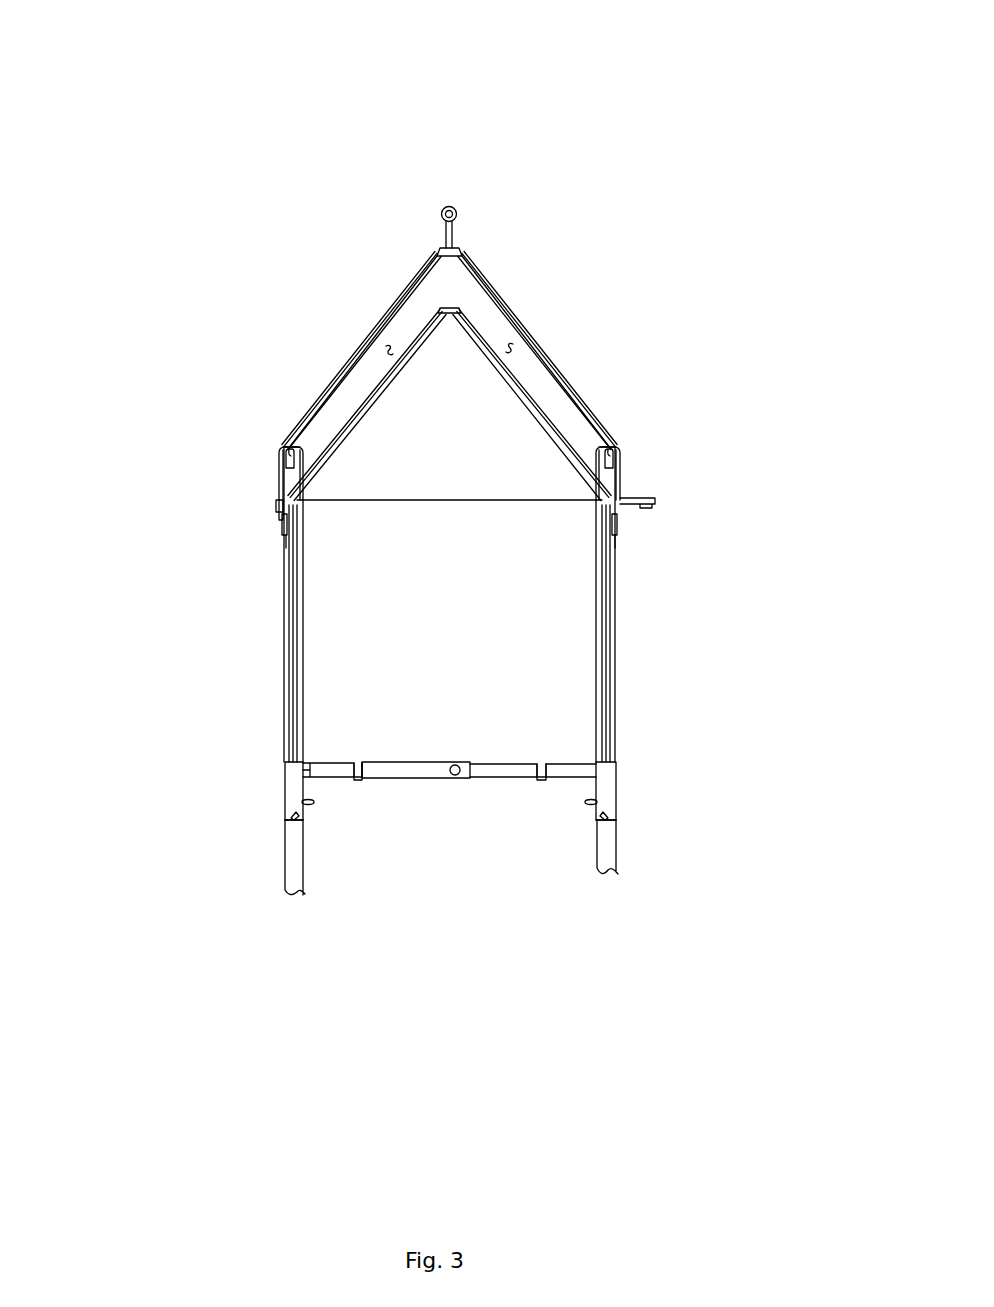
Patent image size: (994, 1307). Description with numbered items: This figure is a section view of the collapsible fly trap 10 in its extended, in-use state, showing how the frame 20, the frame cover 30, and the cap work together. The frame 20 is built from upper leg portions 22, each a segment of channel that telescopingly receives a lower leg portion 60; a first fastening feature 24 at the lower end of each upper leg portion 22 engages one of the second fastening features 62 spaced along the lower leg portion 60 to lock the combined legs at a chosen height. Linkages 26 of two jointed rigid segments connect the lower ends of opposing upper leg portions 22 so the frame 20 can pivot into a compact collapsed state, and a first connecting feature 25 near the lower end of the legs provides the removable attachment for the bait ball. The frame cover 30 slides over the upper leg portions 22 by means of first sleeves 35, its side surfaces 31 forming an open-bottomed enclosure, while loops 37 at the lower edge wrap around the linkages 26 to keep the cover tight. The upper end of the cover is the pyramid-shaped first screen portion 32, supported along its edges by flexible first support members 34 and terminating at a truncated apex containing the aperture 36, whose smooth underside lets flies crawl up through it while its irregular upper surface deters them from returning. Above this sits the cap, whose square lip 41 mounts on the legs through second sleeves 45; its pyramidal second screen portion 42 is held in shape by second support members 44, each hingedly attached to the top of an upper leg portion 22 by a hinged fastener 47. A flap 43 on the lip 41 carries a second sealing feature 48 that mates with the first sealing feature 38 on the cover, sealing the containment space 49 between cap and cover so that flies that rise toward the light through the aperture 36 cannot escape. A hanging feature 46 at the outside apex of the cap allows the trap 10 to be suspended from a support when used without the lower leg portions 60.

The collapsible fly trap 10 is at (100, 110).
The frame 20 is at (472, 868).
The upper leg portion 22 is at (300, 770).
The first fastening feature 24 is at (297, 815).
The first connecting feature 25 is at (302, 804).
The linkage 26 is at (303, 766).
The frame cover 30 is at (690, 627).
The side surface 31 is at (295, 710).
The first screen portion 32 is at (437, 318).
The first support member 34 is at (345, 436).
The first sleeve 35 is at (286, 637).
The aperture 36 is at (456, 322).
The loop 37 is at (358, 779).
The first sealing feature 38 is at (286, 548).
The lip 41 is at (280, 483).
The second screen portion 42 is at (394, 300).
The flap 43 is at (279, 506).
The second support member 44 is at (347, 363).
The second sleeve 45 is at (285, 471).
The hanging feature 46 is at (453, 207).
The hinged fastener 47 is at (292, 450).
The second sealing feature 48 is at (282, 523).
The containment space 49 is at (387, 348).
The lower leg portion 60 is at (305, 875).
The second fastening feature 62 is at (285, 823).